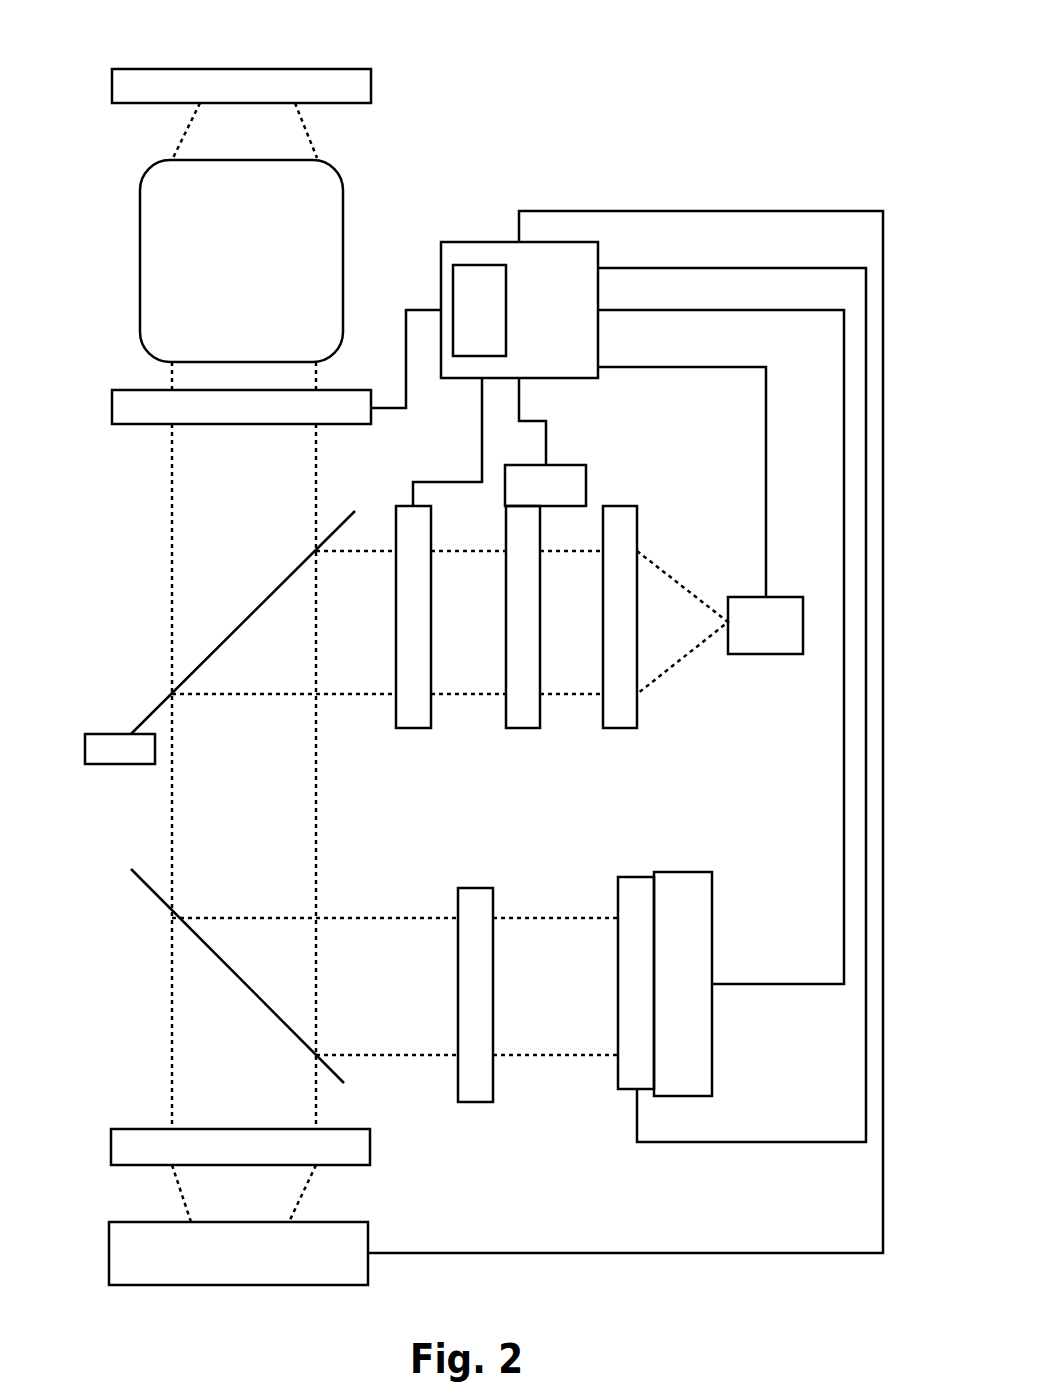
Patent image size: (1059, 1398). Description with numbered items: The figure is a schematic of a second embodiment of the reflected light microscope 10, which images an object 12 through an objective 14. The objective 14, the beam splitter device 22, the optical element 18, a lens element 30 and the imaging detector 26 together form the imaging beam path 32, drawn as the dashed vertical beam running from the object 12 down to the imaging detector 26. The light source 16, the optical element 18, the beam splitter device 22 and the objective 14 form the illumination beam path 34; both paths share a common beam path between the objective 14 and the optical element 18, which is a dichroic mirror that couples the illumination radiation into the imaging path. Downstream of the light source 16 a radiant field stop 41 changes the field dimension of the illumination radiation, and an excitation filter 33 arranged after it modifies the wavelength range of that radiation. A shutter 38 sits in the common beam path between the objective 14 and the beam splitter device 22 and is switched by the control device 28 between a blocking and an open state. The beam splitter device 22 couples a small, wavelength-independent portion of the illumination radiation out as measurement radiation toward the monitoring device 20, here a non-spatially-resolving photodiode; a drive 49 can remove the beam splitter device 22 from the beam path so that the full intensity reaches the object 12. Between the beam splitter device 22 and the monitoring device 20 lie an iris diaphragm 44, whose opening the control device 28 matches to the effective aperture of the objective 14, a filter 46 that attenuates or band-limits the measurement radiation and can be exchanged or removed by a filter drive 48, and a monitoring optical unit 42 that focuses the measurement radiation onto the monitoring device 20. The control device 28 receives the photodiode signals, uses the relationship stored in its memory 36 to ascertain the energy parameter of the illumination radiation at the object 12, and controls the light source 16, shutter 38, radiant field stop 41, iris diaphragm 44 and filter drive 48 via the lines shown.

The reflected light microscope 10 is at (605, 118).
The object 12 is at (112, 87).
The objective 14 is at (140, 262).
The light source 16 is at (680, 1096).
The optical element 18 is at (138, 874).
The monitoring device 20 is at (766, 654).
The beam splitter device 22 is at (169, 694).
The imaging detector 26 is at (109, 1253).
The control device 28 is at (493, 242).
The lens element 30 is at (111, 1148).
The imaging beam path 32 is at (158, 1030).
The excitation filter 33 is at (482, 1102).
The illumination beam path 34 is at (354, 908).
The memory 36 is at (478, 265).
The shutter 38 is at (112, 408).
The radiant field stop 41 is at (627, 1089).
The monitoring optical unit 42 is at (620, 728).
The iris diaphragm 44 is at (413, 728).
The filter 46 is at (522, 728).
The filter drive 48 is at (586, 484).
The drive 49 is at (122, 734).